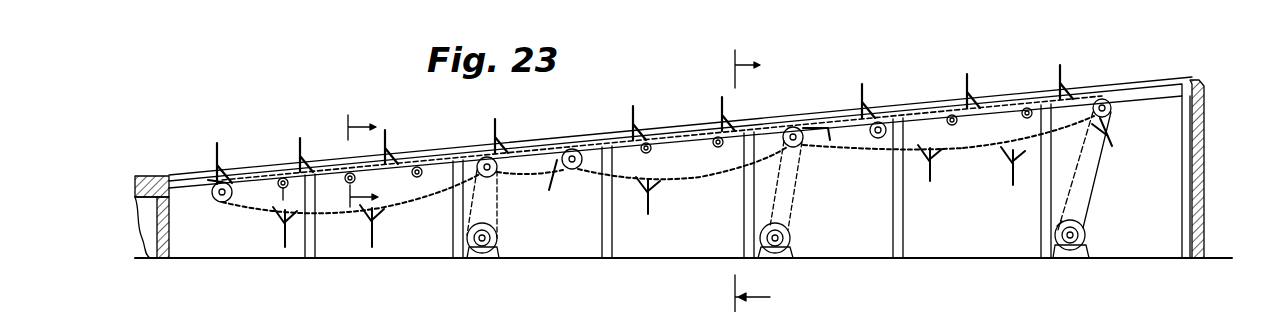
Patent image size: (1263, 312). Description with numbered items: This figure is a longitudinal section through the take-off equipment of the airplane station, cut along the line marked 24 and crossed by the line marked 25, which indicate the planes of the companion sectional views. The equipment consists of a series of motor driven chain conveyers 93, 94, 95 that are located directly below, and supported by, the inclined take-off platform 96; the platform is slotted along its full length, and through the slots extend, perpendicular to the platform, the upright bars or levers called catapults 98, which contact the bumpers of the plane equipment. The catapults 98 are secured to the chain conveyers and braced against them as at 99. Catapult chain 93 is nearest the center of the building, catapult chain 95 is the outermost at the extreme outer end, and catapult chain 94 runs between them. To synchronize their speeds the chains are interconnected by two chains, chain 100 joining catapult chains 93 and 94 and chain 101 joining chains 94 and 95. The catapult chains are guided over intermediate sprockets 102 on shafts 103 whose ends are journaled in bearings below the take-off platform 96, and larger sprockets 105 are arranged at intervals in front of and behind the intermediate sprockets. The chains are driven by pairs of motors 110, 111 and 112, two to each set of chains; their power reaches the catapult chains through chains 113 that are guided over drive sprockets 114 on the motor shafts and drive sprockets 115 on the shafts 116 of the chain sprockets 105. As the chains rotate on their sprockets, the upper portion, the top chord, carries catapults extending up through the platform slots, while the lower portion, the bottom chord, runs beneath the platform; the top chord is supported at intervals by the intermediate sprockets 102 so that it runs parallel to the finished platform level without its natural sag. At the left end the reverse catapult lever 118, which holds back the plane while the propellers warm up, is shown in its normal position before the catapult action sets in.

The section line 24- 24 is at (754, 176).
The section line 25- 25 is at (376, 155).
The catapult chain 93 is at (411, 204).
The catapult chain 94 is at (675, 183).
The catapult chain 95 is at (968, 149).
The take-off platform 96 is at (1191, 78).
The catapult 98 is at (634, 113).
The brace 99 is at (648, 133).
The connecting chain 100 is at (528, 176).
The connecting chain 101 is at (827, 148).
The intermediate sprocket 102 is at (282, 193).
The shaft 103 is at (278, 176).
The larger sprocket 105 is at (222, 178).
The motor 110 is at (1087, 235).
The motor 111 is at (497, 243).
The motor 112 is at (790, 237).
The drive chain 113 is at (1098, 177).
The drive sprocket 114 is at (1062, 221).
The drive sprocket 115 is at (1110, 113).
The shaft 116 is at (1104, 98).
The reverse catapult lever 118 is at (217, 160).